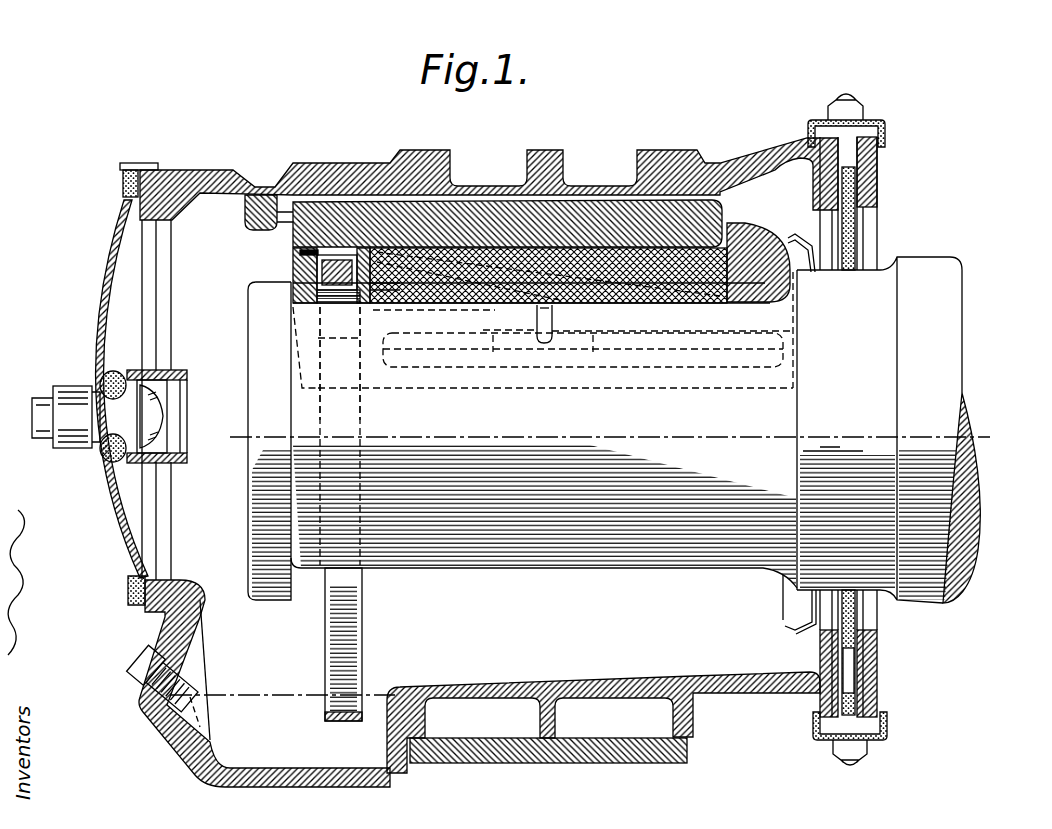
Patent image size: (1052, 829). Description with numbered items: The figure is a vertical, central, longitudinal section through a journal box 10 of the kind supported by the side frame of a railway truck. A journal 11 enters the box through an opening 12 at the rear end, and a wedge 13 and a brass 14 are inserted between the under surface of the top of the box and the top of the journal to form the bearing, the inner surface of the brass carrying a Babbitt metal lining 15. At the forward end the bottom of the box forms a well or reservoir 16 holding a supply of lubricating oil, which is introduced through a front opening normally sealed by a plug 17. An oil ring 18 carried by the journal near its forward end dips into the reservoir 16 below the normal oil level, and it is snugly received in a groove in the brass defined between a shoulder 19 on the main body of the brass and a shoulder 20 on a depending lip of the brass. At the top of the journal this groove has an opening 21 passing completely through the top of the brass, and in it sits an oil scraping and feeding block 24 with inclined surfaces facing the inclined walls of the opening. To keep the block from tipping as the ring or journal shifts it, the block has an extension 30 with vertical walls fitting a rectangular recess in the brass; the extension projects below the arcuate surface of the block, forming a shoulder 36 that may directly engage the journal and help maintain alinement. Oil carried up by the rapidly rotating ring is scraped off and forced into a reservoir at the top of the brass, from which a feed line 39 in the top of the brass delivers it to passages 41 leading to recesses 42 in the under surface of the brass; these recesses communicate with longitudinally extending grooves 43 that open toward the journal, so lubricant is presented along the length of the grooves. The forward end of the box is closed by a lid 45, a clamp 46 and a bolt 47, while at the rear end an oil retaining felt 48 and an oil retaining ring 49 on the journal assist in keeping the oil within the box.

The journal box 10 is at (754, 158).
The journal 11 is at (637, 560).
The opening 12 is at (866, 624).
The wedge 13 is at (360, 222).
The brass 14 is at (752, 222).
The Babbitt metal lining 15 is at (297, 303).
The well or reservoir 16 is at (243, 756).
The plug 17 is at (145, 690).
The oil ring 18 is at (362, 635).
The shoulder 19 is at (356, 366).
The shoulder 20 is at (323, 376).
The opening 21 is at (300, 253).
The oil scraping and feeding block 24 is at (320, 268).
The extension 30 is at (377, 290).
The shoulder 36 is at (362, 300).
The feed line 39 is at (490, 310).
The passage 41 is at (555, 318).
The recess 42 is at (582, 352).
The longitudinally extending groove 43 is at (677, 364).
The lid 45 is at (100, 310).
The clamp 46 is at (187, 368).
The bolt 47 is at (50, 441).
The oil retaining felt 48 is at (853, 610).
The oil retaining ring 49 is at (788, 627).